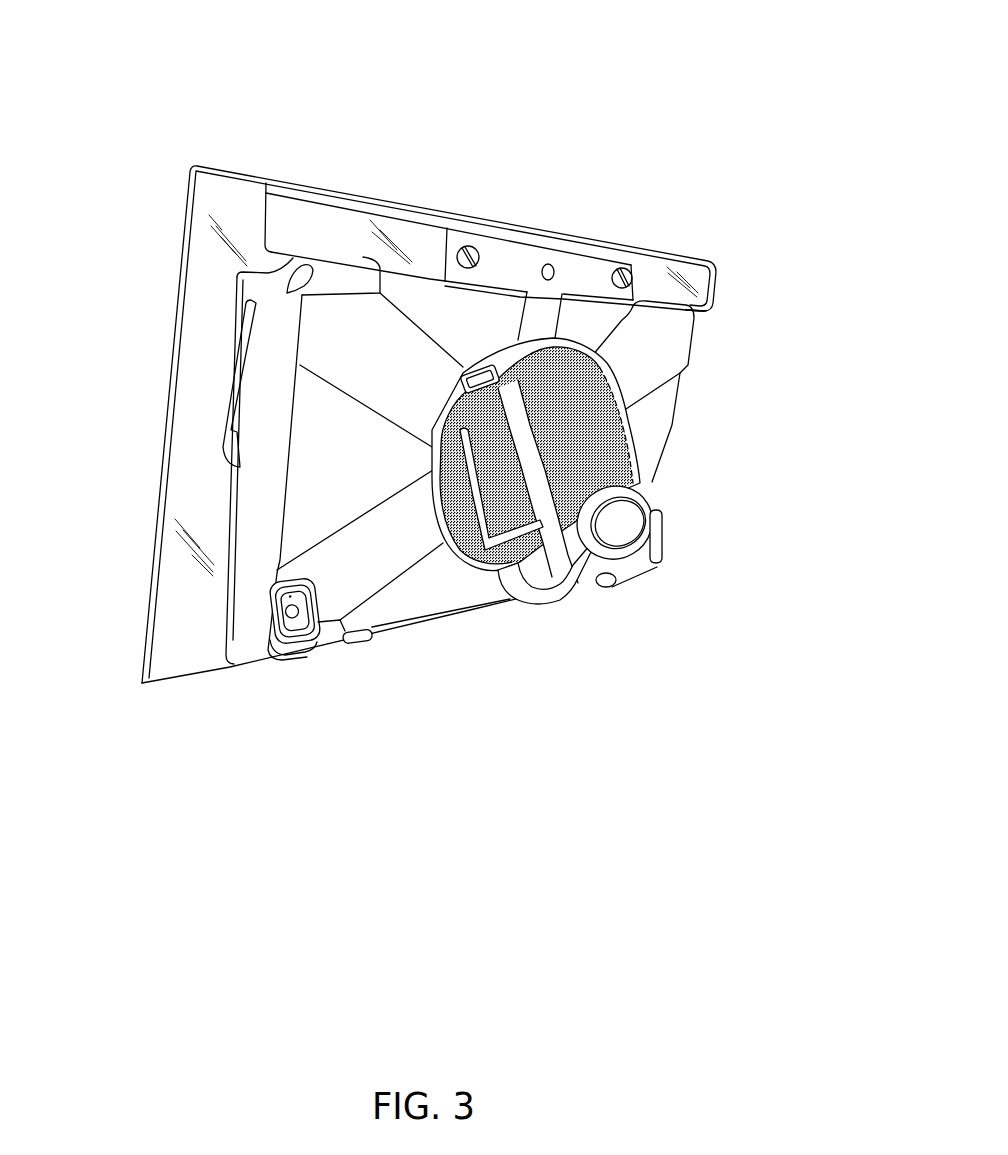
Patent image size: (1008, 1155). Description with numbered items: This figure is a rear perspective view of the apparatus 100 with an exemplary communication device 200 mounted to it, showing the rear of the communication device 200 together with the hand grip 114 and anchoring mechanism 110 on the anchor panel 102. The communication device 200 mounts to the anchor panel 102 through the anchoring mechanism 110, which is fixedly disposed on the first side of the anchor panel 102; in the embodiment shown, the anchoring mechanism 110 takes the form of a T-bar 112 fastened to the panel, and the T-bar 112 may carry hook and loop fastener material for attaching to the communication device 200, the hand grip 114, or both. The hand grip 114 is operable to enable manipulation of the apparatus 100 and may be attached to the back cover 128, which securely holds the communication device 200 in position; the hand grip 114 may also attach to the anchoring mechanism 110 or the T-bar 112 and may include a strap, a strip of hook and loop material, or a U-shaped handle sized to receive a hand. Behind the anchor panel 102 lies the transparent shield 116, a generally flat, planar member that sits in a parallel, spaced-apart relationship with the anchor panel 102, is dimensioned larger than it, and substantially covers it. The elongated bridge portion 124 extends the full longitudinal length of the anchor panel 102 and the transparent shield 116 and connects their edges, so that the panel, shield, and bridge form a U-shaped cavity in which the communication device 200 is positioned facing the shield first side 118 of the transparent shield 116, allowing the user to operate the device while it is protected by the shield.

The apparatus 100 is at (760, 60).
The anchor panel 102 is at (730, 291).
The anchoring mechanism 110 is at (528, 230).
The T-bar 112 is at (593, 260).
The hand grip 114 is at (628, 530).
The transparent shield 116 is at (168, 271).
The shield first side 118 is at (203, 213).
The elongated bridge portion 124 is at (350, 195).
The back cover 128 is at (240, 595).
The communication device 200 is at (510, 460).